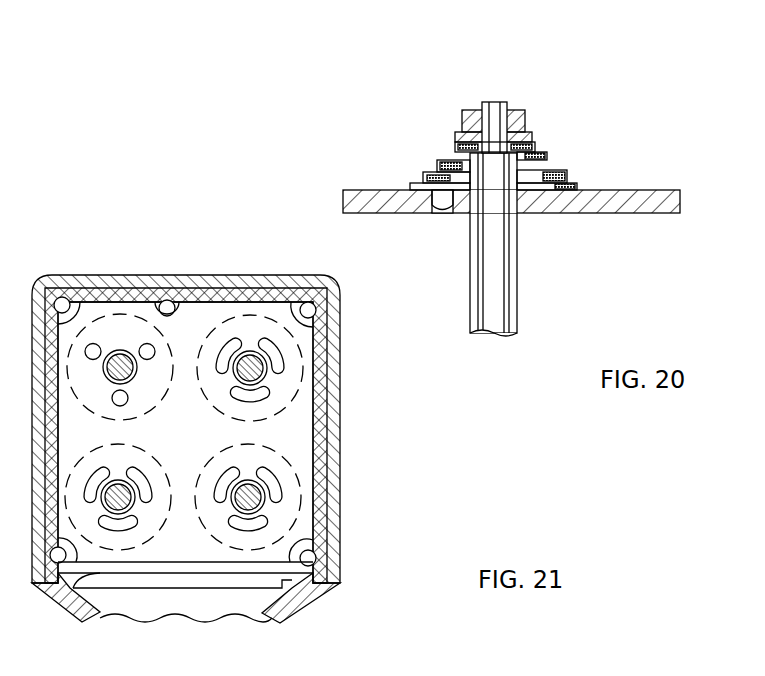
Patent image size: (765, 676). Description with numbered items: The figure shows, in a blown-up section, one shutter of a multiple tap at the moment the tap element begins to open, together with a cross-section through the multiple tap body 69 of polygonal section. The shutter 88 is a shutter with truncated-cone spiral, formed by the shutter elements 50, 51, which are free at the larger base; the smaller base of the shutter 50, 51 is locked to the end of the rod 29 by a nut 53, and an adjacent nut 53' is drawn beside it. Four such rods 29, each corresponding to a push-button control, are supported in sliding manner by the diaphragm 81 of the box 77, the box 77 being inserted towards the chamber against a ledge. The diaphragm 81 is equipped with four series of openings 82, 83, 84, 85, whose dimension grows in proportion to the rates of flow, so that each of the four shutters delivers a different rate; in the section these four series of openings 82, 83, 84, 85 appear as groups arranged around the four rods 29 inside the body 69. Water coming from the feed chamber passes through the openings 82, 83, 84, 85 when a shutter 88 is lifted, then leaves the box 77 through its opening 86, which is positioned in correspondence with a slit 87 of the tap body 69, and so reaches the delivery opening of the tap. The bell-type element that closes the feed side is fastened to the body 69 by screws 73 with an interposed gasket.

In FIG. 20, the rod 29 is at (477, 317).
In FIG. 21, the rod 29 is at (265, 378).
In FIG. 20, the shutter 50 is at (432, 172).
In FIG. 20, the shutter 51 is at (573, 178).
In FIG. 20, the nut 53 is at (511, 97).
In FIG. 20, the lock nut 53' is at (481, 100).
In FIG. 21, the body 69 is at (340, 530).
In FIG. 21, the screws 73 is at (330, 578).
In FIG. 21, the box 77 is at (162, 306).
In FIG. 20, the diaphragm 81 is at (360, 205).
In FIG. 21, the openings 82 is at (98, 344).
In FIG. 21, the openings 83 is at (222, 347).
In FIG. 21, the openings 84 is at (263, 523).
In FIG. 20, the openings 85 is at (447, 213).
In FIG. 21, the openings 85 is at (147, 500).
In FIG. 21, the opening 86 is at (196, 590).
In FIG. 21, the slit 87 is at (112, 590).
In FIG. 20, the shutter 88 is at (577, 155).
In FIG. 21, the shutter 88 is at (278, 422).